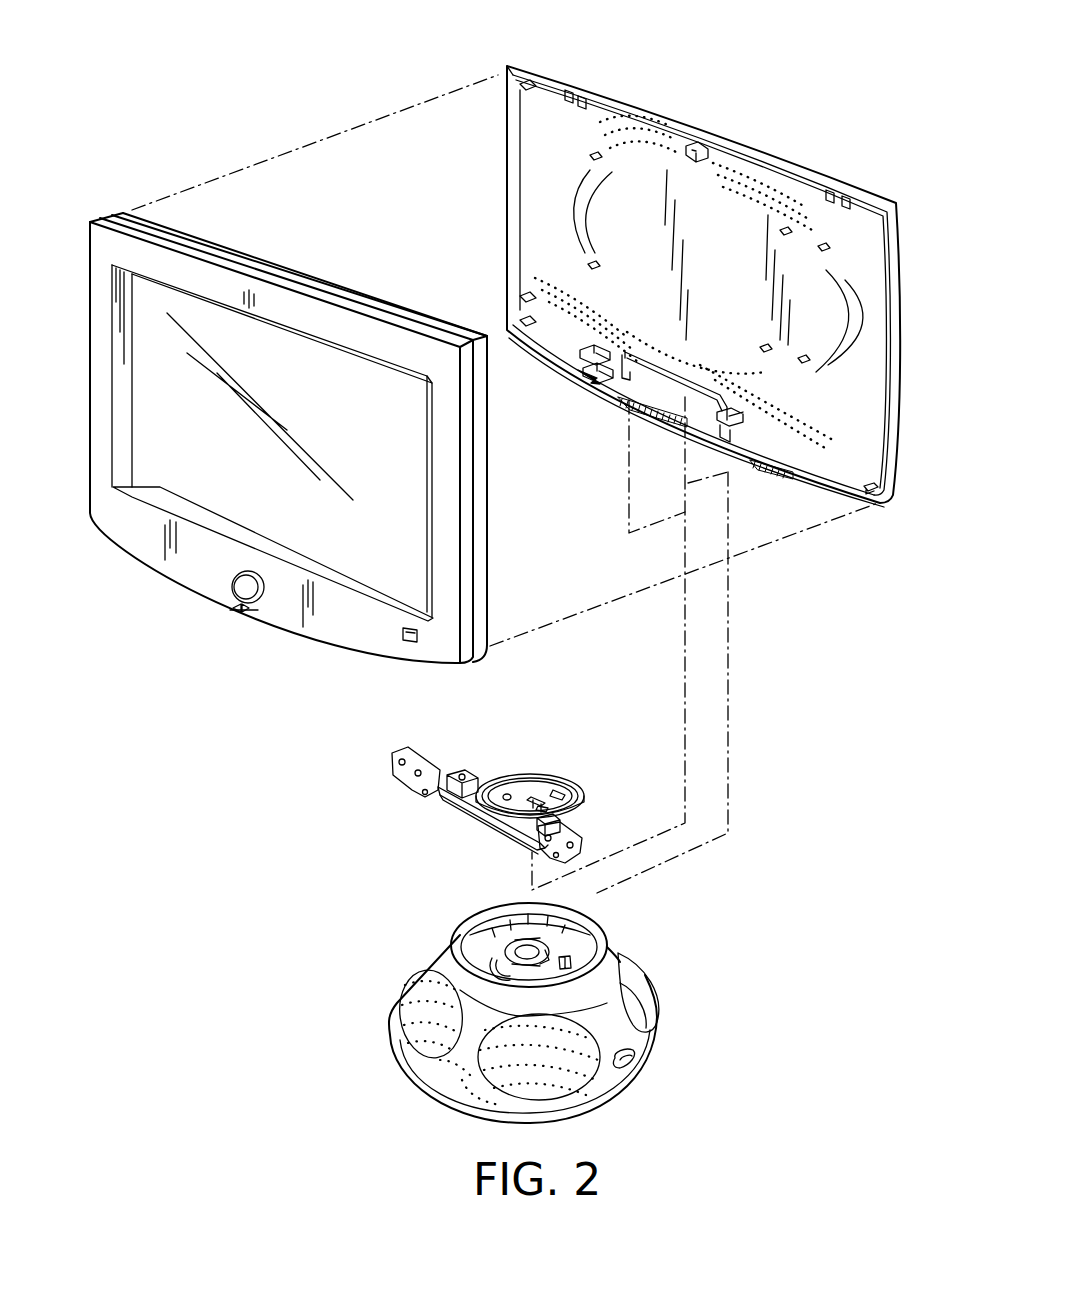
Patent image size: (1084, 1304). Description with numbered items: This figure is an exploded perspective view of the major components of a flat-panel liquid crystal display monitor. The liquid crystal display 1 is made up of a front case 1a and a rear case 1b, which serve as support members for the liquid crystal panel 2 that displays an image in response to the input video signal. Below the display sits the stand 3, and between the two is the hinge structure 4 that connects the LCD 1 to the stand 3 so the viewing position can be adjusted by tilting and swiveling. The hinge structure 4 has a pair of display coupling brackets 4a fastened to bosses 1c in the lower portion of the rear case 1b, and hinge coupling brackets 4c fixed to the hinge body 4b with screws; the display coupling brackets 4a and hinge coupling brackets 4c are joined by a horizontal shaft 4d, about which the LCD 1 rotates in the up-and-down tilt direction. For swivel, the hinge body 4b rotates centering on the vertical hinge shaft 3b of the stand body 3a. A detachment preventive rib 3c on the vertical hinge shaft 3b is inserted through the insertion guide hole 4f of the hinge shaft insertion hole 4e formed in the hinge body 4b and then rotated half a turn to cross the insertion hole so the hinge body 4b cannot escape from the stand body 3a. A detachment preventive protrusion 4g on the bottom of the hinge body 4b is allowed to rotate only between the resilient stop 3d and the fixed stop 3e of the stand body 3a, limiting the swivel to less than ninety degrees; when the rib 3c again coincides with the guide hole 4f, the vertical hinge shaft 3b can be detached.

The liquid crystal display 1 is at (739, 99).
The front case 1a is at (313, 282).
The rear case 1b is at (893, 385).
The bosses 1c is at (587, 368).
The liquid crystal panel 2 is at (157, 483).
The stand 3 is at (391, 963).
The stand body 3a is at (607, 1000).
The vertical hinge shaft 3b is at (470, 924).
The detachment preventive rib 3c is at (510, 935).
The resilient stop 3d is at (507, 978).
The fixed stop 3e is at (572, 960).
The hinge structure 4 is at (452, 818).
The display coupling brackets 4a is at (408, 757).
The hinge body 4b is at (583, 793).
The hinge coupling brackets 4c is at (477, 777).
The horizontal shaft 4d is at (453, 775).
The hinge shaft insertion hole 4e is at (538, 800).
The insertion guide hole 4f is at (563, 793).
The detachment preventive protrusion 4g is at (507, 793).